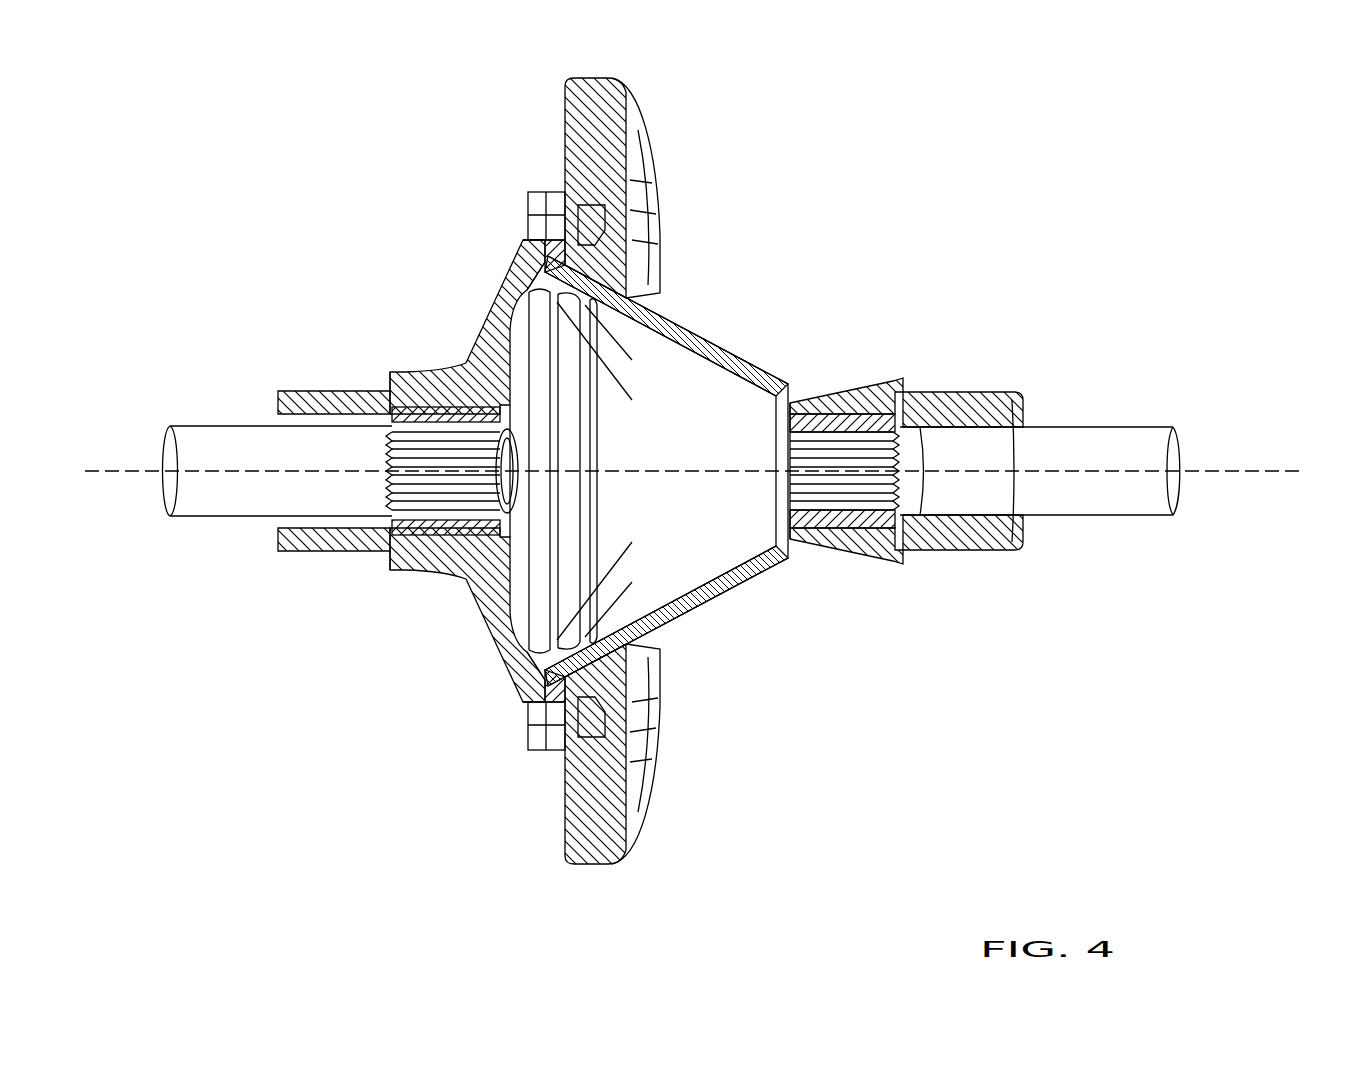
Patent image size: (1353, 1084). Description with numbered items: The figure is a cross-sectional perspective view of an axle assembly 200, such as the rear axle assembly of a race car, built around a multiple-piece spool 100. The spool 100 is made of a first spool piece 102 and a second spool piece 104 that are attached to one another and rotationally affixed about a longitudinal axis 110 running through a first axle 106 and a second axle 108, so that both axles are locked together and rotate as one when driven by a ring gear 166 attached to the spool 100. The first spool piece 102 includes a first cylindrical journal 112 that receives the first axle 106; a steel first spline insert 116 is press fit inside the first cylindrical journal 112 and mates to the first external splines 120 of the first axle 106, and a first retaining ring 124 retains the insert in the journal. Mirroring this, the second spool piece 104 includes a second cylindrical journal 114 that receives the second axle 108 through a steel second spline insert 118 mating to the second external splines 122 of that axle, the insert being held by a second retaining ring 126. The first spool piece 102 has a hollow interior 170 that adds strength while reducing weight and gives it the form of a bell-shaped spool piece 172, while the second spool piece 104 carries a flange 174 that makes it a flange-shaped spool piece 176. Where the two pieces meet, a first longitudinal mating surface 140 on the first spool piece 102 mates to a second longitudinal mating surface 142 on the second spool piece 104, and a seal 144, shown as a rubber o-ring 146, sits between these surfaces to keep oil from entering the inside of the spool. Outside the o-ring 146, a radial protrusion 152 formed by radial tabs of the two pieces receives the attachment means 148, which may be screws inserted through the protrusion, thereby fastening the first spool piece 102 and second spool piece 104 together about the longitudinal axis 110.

The multiple-piece spool 100 is at (392, 168).
The first spool piece 102 is at (712, 338).
The second spool piece 104 is at (431, 471).
The first axle 106 is at (1062, 530).
The second axle 108 is at (200, 520).
The longitudinal axis 110 is at (1282, 470).
The first cylindrical journal 112 is at (965, 395).
The second cylindrical journal 114 is at (305, 392).
The first spline insert 116 is at (855, 383).
The second spline insert 118 is at (448, 400).
The first external splines 120 is at (878, 568).
The second external splines 122 is at (390, 478).
The first retaining ring 124 is at (800, 560).
The second retaining ring 126 is at (492, 545).
The first longitudinal mating surface 140 is at (556, 302).
The second longitudinal mating surface 142 is at (528, 218).
The seal 144 is at (530, 262).
The rubber o-ring 146 is at (536, 471).
The attachment means 148 is at (505, 160).
The radial protrusion 152 is at (510, 198).
The ring gear 166 is at (660, 210).
The hollow interior 170 is at (720, 405).
The bell-shaped spool piece 172 is at (706, 255).
The flange 174 is at (560, 372).
The flange-shaped spool piece 176 is at (340, 242).
The axle assembly 200 is at (896, 92).